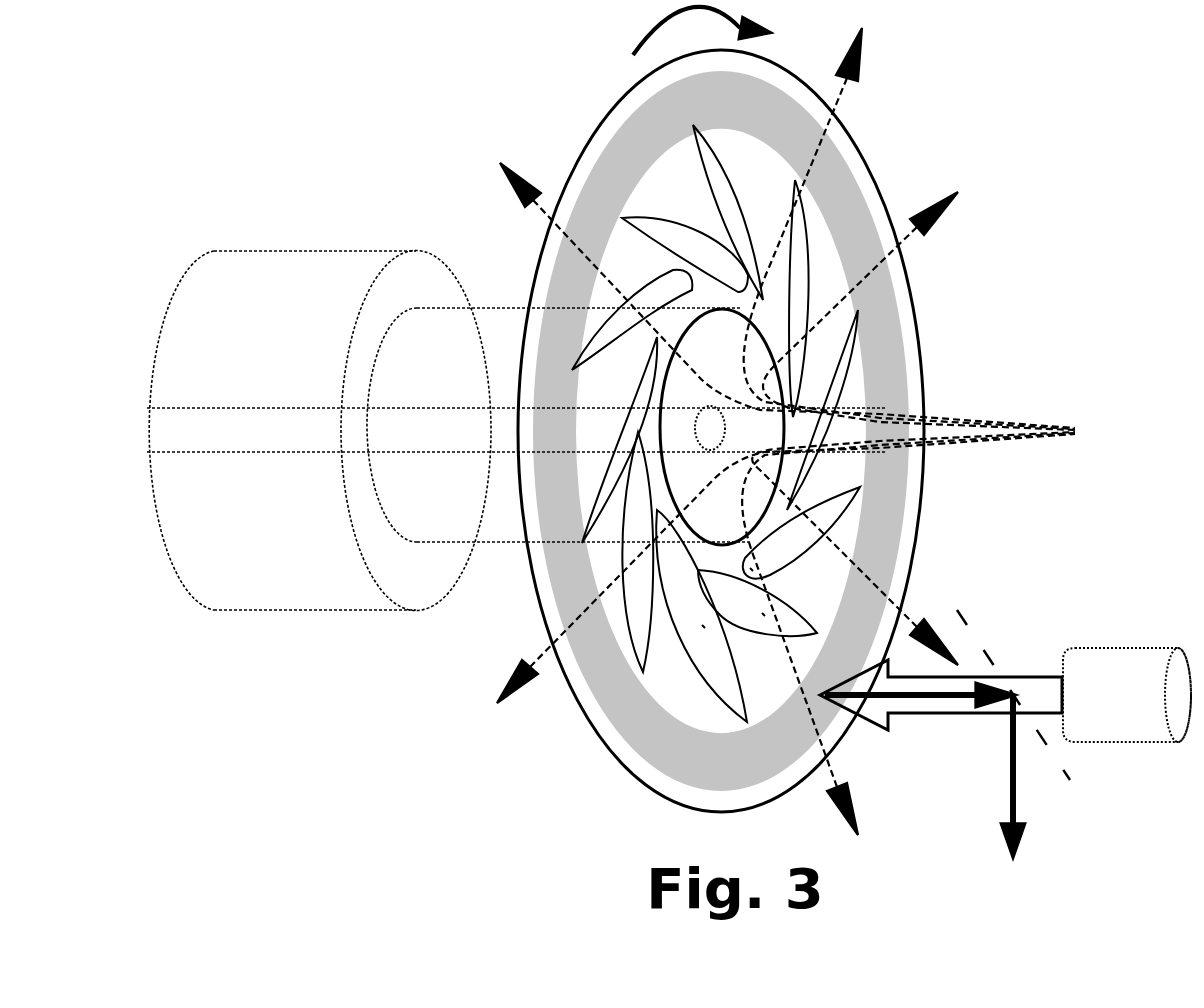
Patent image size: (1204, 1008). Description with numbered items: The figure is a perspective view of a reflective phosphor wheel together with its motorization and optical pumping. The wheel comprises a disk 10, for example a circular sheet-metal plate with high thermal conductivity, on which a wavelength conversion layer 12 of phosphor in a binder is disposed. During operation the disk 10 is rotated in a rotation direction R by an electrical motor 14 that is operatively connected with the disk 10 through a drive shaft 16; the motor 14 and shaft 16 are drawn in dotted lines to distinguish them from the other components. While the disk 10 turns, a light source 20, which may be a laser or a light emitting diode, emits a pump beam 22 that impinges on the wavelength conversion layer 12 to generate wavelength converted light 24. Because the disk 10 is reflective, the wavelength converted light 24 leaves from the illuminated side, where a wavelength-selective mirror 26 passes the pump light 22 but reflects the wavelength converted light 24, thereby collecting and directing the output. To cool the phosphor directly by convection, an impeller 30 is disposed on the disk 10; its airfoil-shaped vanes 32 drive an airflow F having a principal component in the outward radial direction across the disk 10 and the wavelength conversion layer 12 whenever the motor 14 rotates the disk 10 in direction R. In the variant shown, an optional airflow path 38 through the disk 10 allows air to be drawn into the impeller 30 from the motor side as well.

The disk 10 is at (623, 93).
The wavelength conversion layer 12 is at (605, 163).
The electrical motor 14 is at (280, 252).
The drive shaft 16 is at (500, 308).
The light source 20 is at (1130, 660).
The pump beam 22 is at (925, 713).
The wavelength converted light 24 is at (940, 700).
The wavelength-selective mirror 26 is at (975, 638).
The impeller 30 is at (680, 647).
The vanes 32 is at (762, 613).
The airflow path 38 is at (279, 454).
The airflow F is at (915, 220).
The rotation direction R is at (703, 31).